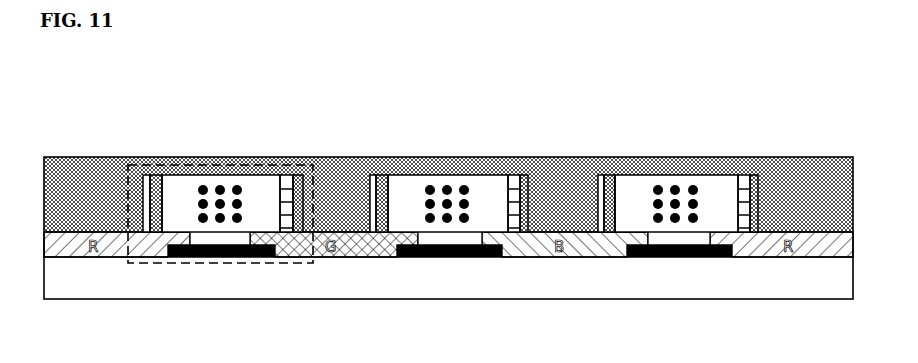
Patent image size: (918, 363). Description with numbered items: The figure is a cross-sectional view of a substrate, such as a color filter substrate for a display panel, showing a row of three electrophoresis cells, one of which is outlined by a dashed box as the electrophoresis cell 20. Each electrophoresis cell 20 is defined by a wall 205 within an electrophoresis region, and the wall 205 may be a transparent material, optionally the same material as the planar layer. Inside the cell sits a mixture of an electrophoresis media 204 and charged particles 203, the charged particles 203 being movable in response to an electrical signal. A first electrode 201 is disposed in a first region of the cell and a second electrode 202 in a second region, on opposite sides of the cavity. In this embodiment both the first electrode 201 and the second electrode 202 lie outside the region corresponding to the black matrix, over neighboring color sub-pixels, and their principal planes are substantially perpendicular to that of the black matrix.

The electrophoresis cell 20 is at (215, 265).
The first electrode 201 is at (287, 175).
The second electrode 202 is at (157, 177).
The charged particles 203 is at (220, 188).
The electrophoresis media 204 is at (188, 182).
The wall 205 is at (138, 205).